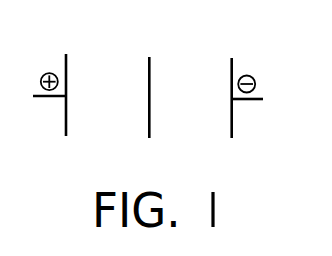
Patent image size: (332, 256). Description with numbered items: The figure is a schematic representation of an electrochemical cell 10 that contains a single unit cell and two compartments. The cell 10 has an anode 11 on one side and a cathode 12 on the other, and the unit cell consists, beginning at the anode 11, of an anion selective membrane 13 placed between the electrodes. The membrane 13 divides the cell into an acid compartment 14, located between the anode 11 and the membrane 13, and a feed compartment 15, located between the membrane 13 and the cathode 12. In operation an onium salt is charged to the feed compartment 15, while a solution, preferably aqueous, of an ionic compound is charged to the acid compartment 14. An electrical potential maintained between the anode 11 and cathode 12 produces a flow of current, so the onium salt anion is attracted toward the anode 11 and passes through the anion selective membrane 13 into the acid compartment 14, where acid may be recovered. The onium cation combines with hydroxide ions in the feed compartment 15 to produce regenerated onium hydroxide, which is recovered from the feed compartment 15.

The electrochemical cell 10 is at (161, 85).
The anode 11 is at (61, 32).
The cathode 12 is at (225, 33).
The anion selective membrane 13 is at (143, 33).
The acid compartment 14 is at (99, 88).
The feed compartment 15 is at (180, 88).